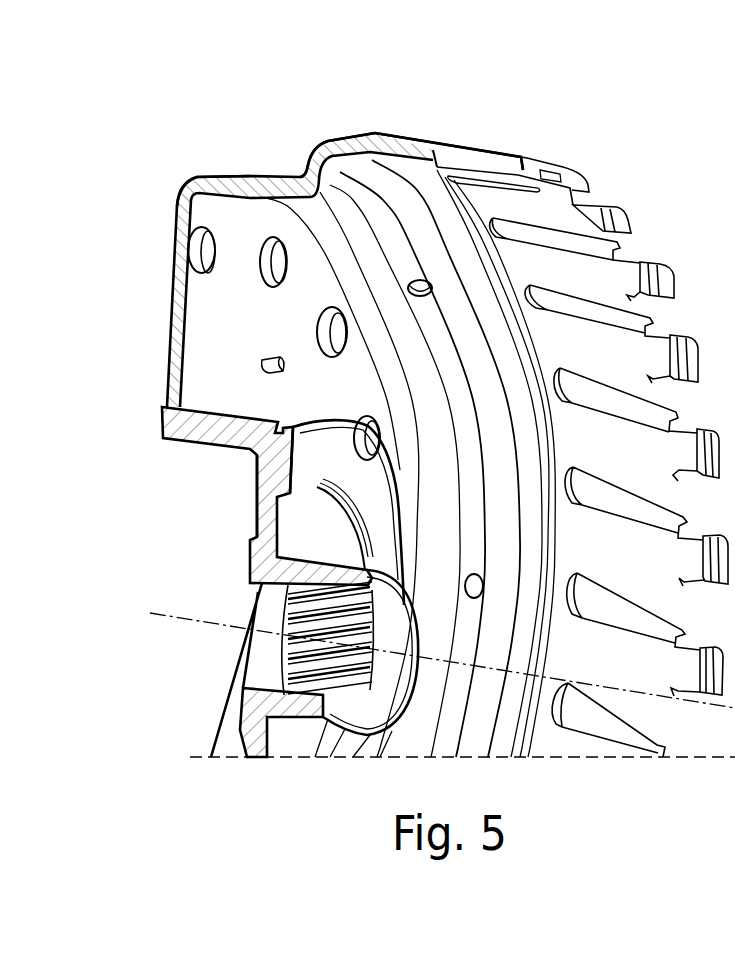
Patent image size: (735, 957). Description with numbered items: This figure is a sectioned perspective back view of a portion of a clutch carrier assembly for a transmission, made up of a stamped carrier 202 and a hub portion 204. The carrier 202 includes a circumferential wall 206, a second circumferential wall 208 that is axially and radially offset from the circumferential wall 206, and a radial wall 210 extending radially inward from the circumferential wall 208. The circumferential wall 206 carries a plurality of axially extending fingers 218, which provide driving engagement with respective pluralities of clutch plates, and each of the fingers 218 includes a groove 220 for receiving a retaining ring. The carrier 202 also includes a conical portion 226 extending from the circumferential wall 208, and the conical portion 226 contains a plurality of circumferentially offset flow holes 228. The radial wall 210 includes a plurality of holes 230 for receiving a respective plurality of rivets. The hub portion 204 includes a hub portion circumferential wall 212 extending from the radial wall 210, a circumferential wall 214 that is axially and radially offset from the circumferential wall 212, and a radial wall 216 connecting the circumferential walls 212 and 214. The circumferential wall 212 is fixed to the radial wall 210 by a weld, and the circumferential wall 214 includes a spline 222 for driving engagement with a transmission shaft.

The stamped carrier 202 is at (195, 208).
The hub portion 204 is at (175, 428).
The circumferential wall 206 is at (326, 146).
The circumferential wall 208 is at (240, 183).
The radial wall 210 is at (207, 298).
The hub portion circumferential wall 212 is at (217, 433).
The circumferential wall 214 is at (262, 577).
The radial wall 216 is at (262, 543).
The axially extending fingers 218 is at (483, 150).
The groove 220 is at (656, 258).
The spline 222 is at (277, 670).
The conical portion 226 is at (453, 380).
The flow holes 228 is at (402, 290).
The holes 230 is at (190, 250).